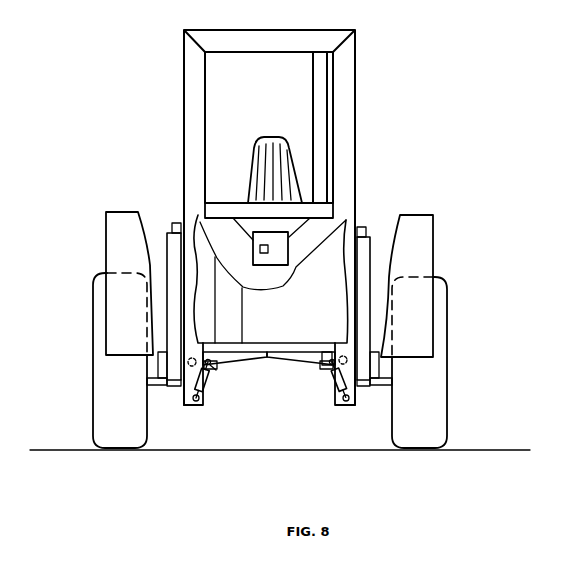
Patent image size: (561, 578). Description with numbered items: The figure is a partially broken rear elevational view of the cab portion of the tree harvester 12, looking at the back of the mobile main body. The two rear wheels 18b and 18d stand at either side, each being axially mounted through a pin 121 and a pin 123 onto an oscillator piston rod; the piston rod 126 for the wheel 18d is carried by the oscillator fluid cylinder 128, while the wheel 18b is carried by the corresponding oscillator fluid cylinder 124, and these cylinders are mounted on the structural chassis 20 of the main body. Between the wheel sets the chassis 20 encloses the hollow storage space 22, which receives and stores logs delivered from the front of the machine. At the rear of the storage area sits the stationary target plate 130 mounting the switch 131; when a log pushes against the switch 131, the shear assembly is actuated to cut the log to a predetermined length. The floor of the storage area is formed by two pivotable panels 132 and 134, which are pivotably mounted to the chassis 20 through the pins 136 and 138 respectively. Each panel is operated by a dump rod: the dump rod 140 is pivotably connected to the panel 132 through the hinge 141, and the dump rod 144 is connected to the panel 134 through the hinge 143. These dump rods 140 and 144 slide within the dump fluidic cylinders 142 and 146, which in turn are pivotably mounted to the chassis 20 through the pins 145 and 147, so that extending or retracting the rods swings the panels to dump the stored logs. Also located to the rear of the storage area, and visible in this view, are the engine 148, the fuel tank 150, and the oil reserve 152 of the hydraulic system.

The tree harvester 12 is at (166, 363).
The rear wheel 18b is at (93, 411).
The rear wheel 18d is at (447, 362).
The chassis 20 is at (192, 222).
The storage space 22 is at (230, 227).
The pin 121 is at (170, 384).
The pin 123 is at (366, 384).
The oscillator fluid cylinder 124 is at (170, 272).
The oscillator piston rod 126 is at (379, 363).
The oscillator fluid cylinder 128 is at (363, 263).
The stationary target plate 130 is at (284, 256).
The switch 131 is at (259, 249).
The pivotable panel 132 is at (240, 356).
The pivotable panel 134 is at (318, 358).
The pin 136 is at (211, 341).
The pin 138 is at (387, 337).
The dump rod 140 is at (218, 370).
The hinge 141 is at (218, 366).
The dump fluidic cylinder 142 is at (206, 392).
The hinge 143 is at (327, 352).
The dump rod 144 is at (326, 368).
The pin 145 is at (194, 402).
The dump fluidic cylinder 146 is at (342, 400).
The pin 147 is at (350, 402).
The engine 148 is at (300, 291).
The fuel tank 150 is at (114, 296).
The oil reserve 152 is at (230, 290).